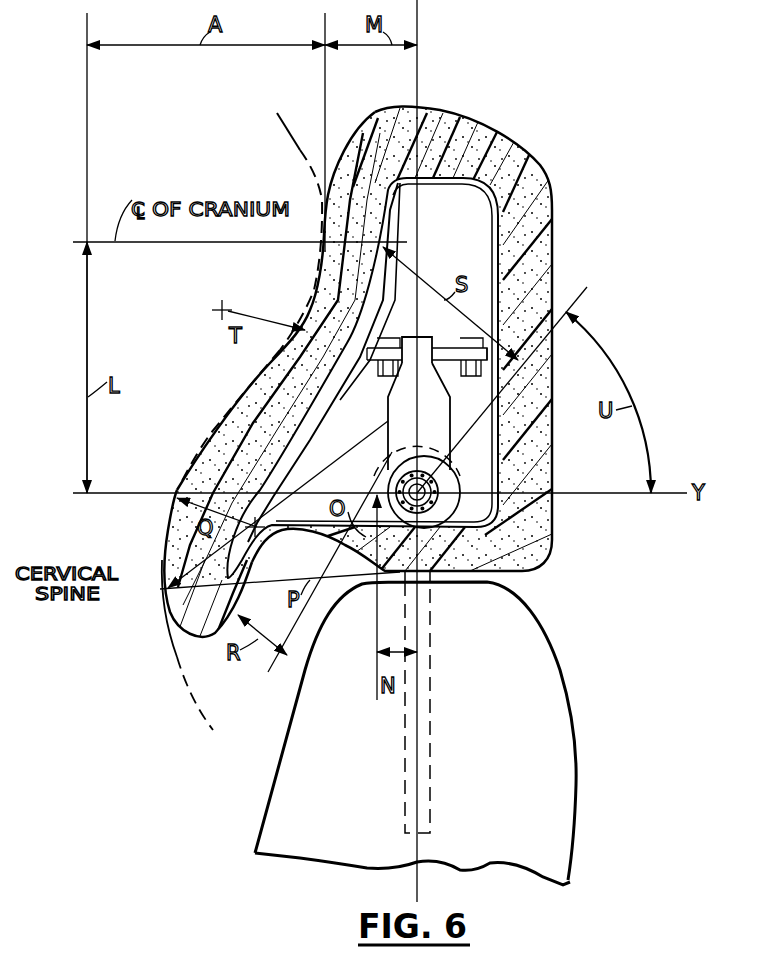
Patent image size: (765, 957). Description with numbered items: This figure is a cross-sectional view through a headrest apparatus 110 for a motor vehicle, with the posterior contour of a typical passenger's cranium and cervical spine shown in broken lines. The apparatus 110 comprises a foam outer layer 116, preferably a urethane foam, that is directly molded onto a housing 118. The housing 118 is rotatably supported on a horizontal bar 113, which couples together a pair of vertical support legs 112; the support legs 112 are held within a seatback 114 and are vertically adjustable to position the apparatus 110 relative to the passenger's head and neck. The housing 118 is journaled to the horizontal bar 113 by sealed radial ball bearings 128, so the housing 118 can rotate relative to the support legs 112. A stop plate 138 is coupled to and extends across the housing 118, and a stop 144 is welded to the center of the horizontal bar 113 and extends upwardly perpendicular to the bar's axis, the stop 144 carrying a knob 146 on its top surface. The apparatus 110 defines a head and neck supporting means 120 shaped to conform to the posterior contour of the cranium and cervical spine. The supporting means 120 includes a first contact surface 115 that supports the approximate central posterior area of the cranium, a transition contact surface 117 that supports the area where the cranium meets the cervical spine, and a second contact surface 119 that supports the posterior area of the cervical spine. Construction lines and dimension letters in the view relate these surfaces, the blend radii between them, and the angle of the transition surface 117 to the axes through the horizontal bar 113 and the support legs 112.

The apparatus 110 is at (560, 152).
The vertical support legs 112 is at (430, 728).
The horizontal bar 113 is at (457, 484).
The seatback 114 is at (550, 637).
The first contact surface 115 is at (317, 207).
The foam outer layer 116 is at (543, 210).
The transition contact surface 117 is at (257, 368).
The housing 118 is at (495, 250).
The second contact surface 119 is at (158, 545).
The head and neck supporting means 120 is at (317, 317).
The sealed radial ball bearings 128 is at (388, 467).
The stop plate 138 is at (443, 346).
The stop 144 is at (397, 418).
The knob 146 is at (410, 336).